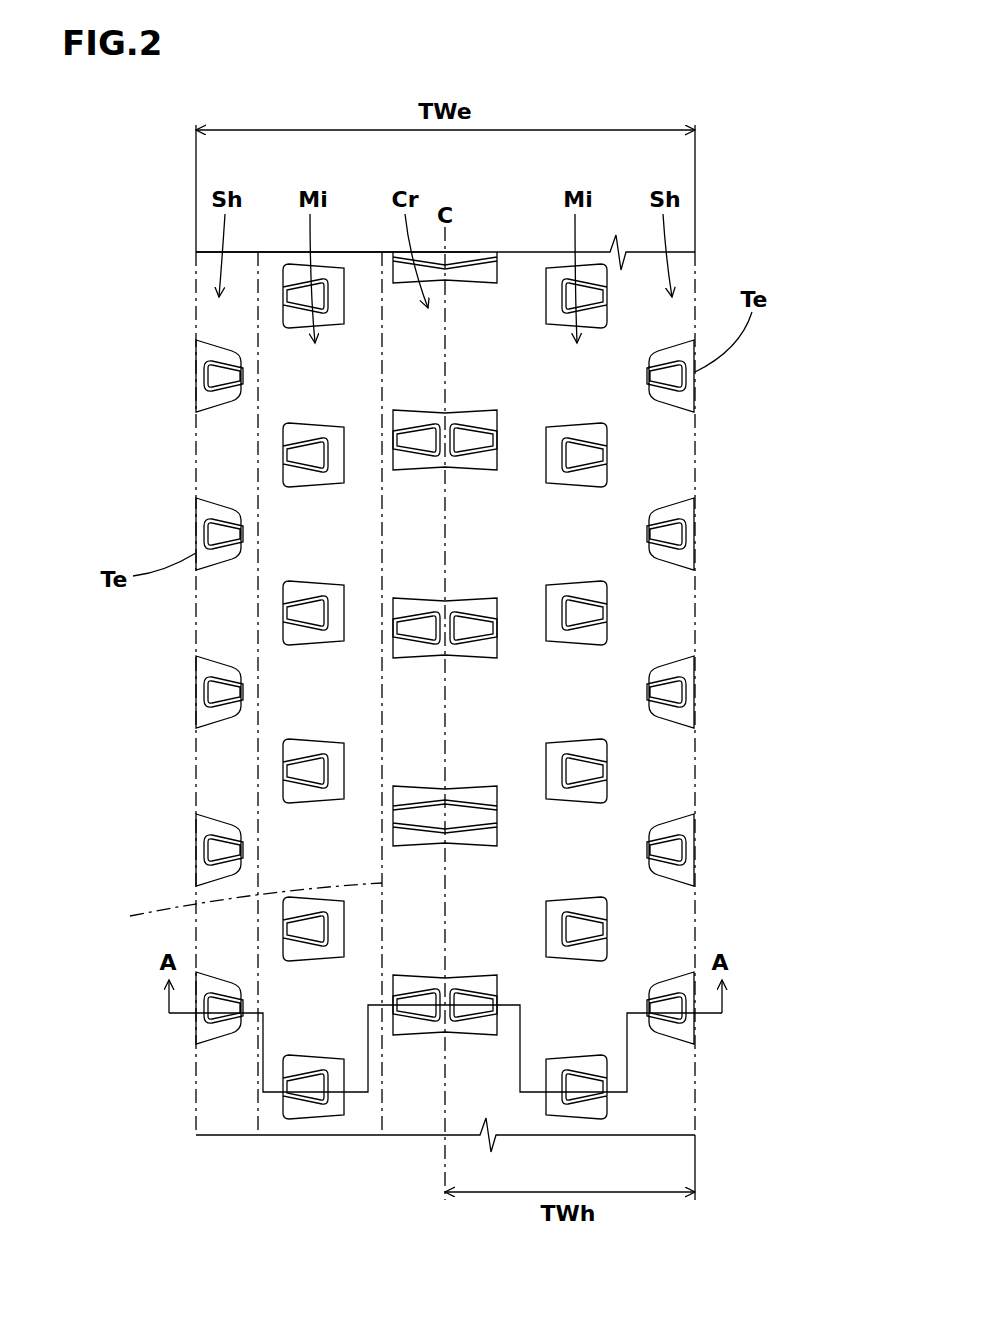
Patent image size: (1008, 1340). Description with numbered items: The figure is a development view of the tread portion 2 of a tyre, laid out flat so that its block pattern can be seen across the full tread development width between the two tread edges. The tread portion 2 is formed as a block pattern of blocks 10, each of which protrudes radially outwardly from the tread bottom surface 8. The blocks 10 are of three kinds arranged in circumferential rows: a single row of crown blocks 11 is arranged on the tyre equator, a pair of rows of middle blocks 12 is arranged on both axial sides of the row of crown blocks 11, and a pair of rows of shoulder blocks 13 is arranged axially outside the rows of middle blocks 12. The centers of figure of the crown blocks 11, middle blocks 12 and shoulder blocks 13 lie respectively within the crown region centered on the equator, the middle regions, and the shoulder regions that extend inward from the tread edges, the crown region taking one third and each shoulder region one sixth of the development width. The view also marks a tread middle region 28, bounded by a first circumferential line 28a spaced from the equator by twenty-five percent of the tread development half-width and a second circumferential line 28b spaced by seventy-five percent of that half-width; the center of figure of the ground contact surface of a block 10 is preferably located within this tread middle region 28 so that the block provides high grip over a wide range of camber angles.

The tread portion 2 is at (364, 247).
The tread bottom surface 8 is at (520, 320).
The blocks 10 is at (102, 310).
The crown blocks 11 is at (413, 415).
The middle blocks 12 is at (307, 455).
The shoulder blocks 13 is at (228, 533).
The tread middle region 28 is at (316, 1036).
The first circumferential line 28a is at (232, 907).
The second circumferential line 28b is at (258, 773).